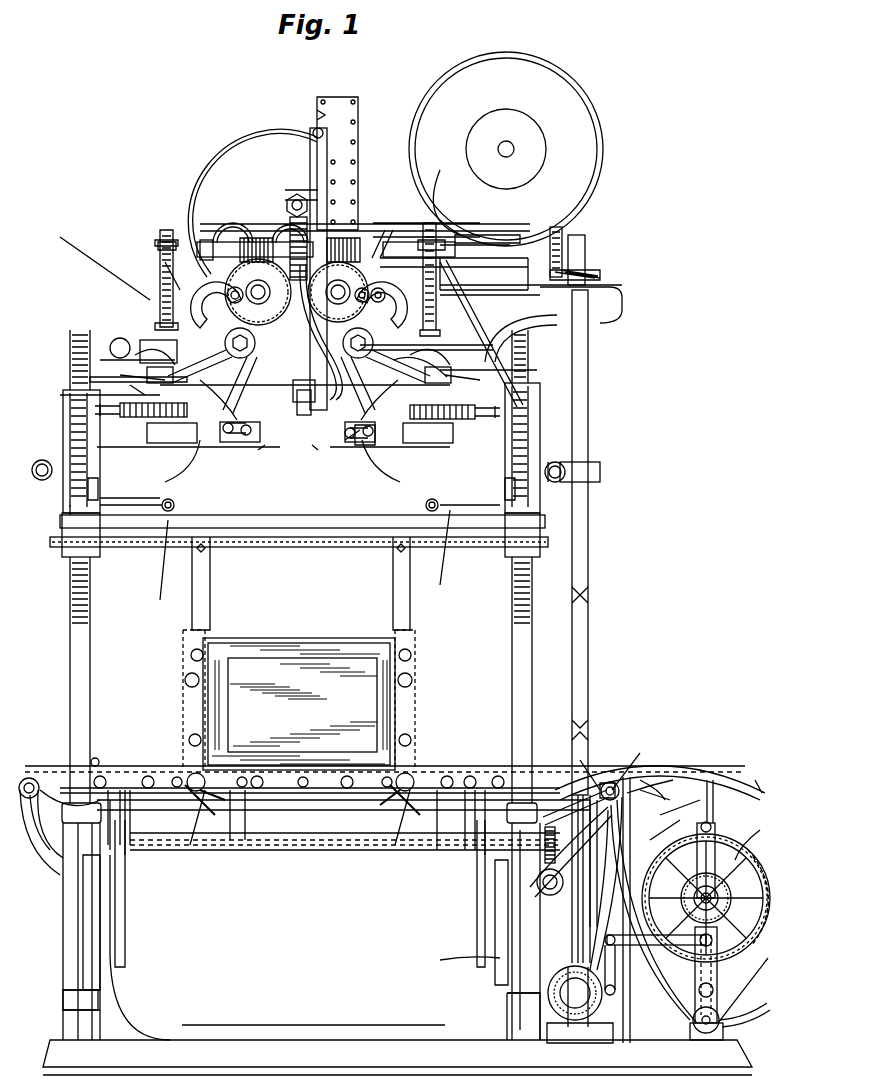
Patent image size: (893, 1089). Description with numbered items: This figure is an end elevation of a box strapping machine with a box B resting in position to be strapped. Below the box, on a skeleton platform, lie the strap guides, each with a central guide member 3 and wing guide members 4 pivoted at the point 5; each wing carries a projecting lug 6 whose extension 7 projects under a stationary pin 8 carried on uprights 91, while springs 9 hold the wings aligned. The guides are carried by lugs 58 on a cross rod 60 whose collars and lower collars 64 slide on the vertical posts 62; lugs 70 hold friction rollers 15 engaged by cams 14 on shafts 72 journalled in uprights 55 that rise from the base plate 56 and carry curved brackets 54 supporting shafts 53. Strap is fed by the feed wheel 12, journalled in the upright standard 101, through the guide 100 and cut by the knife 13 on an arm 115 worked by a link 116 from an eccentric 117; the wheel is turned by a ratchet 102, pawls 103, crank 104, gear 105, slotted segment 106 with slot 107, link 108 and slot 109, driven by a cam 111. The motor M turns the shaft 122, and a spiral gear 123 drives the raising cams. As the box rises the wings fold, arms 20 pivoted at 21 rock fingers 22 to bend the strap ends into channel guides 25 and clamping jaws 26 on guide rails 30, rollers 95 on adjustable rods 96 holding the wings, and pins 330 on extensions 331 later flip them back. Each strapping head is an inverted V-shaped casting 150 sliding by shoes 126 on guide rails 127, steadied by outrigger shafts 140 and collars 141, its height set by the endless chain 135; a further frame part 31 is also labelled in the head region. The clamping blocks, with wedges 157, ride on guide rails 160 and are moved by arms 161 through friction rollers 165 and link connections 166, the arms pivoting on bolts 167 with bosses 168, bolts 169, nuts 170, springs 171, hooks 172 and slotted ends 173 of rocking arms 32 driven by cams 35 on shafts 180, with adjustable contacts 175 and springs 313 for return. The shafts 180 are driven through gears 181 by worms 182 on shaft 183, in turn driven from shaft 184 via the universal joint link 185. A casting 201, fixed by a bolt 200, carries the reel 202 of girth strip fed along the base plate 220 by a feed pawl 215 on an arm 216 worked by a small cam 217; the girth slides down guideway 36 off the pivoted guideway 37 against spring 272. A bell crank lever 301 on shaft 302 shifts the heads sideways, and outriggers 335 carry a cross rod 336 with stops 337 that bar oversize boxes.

The central guide member 3 is at (315, 795).
The wing guide member 4 is at (190, 678).
The pivot point 5 is at (190, 778).
The projecting lug 6 is at (192, 850).
The extension 7 is at (245, 795).
The stationary pin 8 is at (222, 775).
The spring 9 is at (215, 795).
The feed wheel 12 is at (697, 777).
The knife 13 is at (647, 773).
The cam 14 is at (123, 955).
The friction roller 15 is at (123, 790).
The projecting arm 20 is at (95, 800).
The arm pivot 21 is at (75, 790).
The finger 22 is at (212, 635).
The channel guide 25 is at (182, 480).
The clamping jaw 26 is at (237, 435).
The guide rail 30 is at (270, 450).
The plate 31 is at (160, 385).
The rocking arm 32 is at (180, 290).
The operating cam 35 is at (257, 257).
The guideway 36 is at (298, 255).
The pivoted guideway 37 is at (308, 410).
The shaft 53 is at (665, 796).
The curved bracket 54 is at (48, 870).
The upright 55 is at (97, 882).
The base plate 56 is at (345, 1045).
The lug 58 is at (222, 805).
The cross rod 60 is at (425, 815).
The vertical post 62 is at (83, 660).
The lower collar 64 is at (92, 1002).
The lug 70 is at (112, 790).
The shaft 72 is at (437, 855).
The upright 91 is at (226, 845).
The roller 95 is at (175, 505).
The adjustable rod 96 is at (150, 540).
The guide 100 is at (667, 753).
The upright standard 101 is at (718, 1020).
The ratchet 102 is at (745, 830).
The pawl 103 is at (688, 822).
The crank 104 is at (712, 870).
The gear 105 is at (765, 862).
The segment 106 is at (740, 955).
The slot 107 is at (720, 985).
The link 108 is at (690, 1020).
The slot 109 is at (617, 965).
The cam 111 is at (500, 880).
The arm 115 is at (640, 753).
The link 116 is at (580, 760).
The eccentric 117 is at (440, 960).
The shaft 122 is at (640, 790).
The spiral gear 123 is at (595, 790).
The shoe 126 is at (92, 480).
The guide rail 127 is at (96, 490).
The endless chain 135 is at (305, 560).
The outrigger shaft 140 is at (617, 452).
The collar 141 is at (548, 462).
The casting 150 is at (287, 160).
The wedge 157 is at (350, 445).
The guide rail 160 is at (177, 440).
The arm 161 is at (95, 427).
The friction roller 165 is at (365, 448).
The link connection 166 is at (236, 423).
The bolt 167 is at (228, 347).
The boss 168 is at (478, 313).
The bolt 169 is at (167, 230).
The nut 170 is at (170, 240).
The spring 171 is at (160, 250).
The hook 172 is at (135, 360).
The arm end 173 is at (97, 378).
The adjustable contact 175 is at (100, 360).
The shaft 180 is at (238, 225).
The gear 181 is at (305, 292).
The worm 182 is at (258, 280).
The shaft 183 is at (560, 257).
The shaft 184 is at (580, 520).
The universal joint link 185 is at (580, 620).
The bolt 200 is at (325, 197).
The casting 201 is at (582, 100).
The reel 202 is at (560, 148).
The feed pawl 215 is at (372, 258).
The arm 216 is at (447, 270).
The small cam 217 is at (312, 300).
The base plate 220 is at (493, 240).
The spring 272 is at (287, 200).
The bell crank lever 301 is at (145, 340).
The shaft 302 is at (142, 358).
The spring 313 is at (66, 513).
The pin 330 is at (185, 800).
The extension 331 is at (410, 800).
The outrigger 335 is at (76, 450).
The cross rod 336 is at (277, 524).
The stop 337 is at (211, 560).
The box B is at (320, 690).
The motor M is at (570, 975).